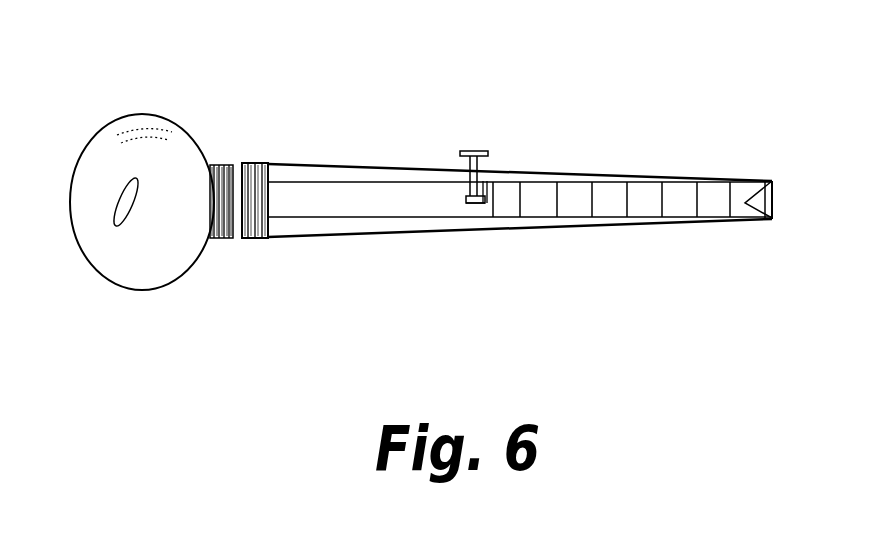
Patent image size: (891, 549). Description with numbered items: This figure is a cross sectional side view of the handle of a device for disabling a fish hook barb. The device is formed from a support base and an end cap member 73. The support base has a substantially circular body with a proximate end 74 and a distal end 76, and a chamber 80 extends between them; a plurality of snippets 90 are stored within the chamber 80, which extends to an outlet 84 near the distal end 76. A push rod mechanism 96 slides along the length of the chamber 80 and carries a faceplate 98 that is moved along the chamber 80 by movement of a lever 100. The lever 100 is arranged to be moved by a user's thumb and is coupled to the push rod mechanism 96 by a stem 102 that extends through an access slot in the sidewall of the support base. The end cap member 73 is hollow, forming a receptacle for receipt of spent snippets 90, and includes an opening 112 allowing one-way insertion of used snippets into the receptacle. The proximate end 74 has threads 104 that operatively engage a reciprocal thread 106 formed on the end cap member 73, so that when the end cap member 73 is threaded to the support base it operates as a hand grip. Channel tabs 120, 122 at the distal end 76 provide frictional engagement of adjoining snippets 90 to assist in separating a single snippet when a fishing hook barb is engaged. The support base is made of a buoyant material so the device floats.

The end cap member 73 is at (152, 112).
The opening 112 is at (118, 220).
The reciprocal thread 106 is at (215, 163).
The proximate end 74 is at (245, 163).
The threads 104 is at (254, 239).
The chamber 80 is at (347, 210).
The snippets 90 is at (675, 192).
The distal end 76 is at (766, 178).
The channel tab 122 is at (772, 183).
The outlet 84 is at (782, 202).
The channel tab 120 is at (773, 219).
The lever 100 is at (477, 150).
The faceplate 98 is at (487, 182).
The stem 102 is at (463, 183).
The push rod mechanism 96 is at (483, 203).